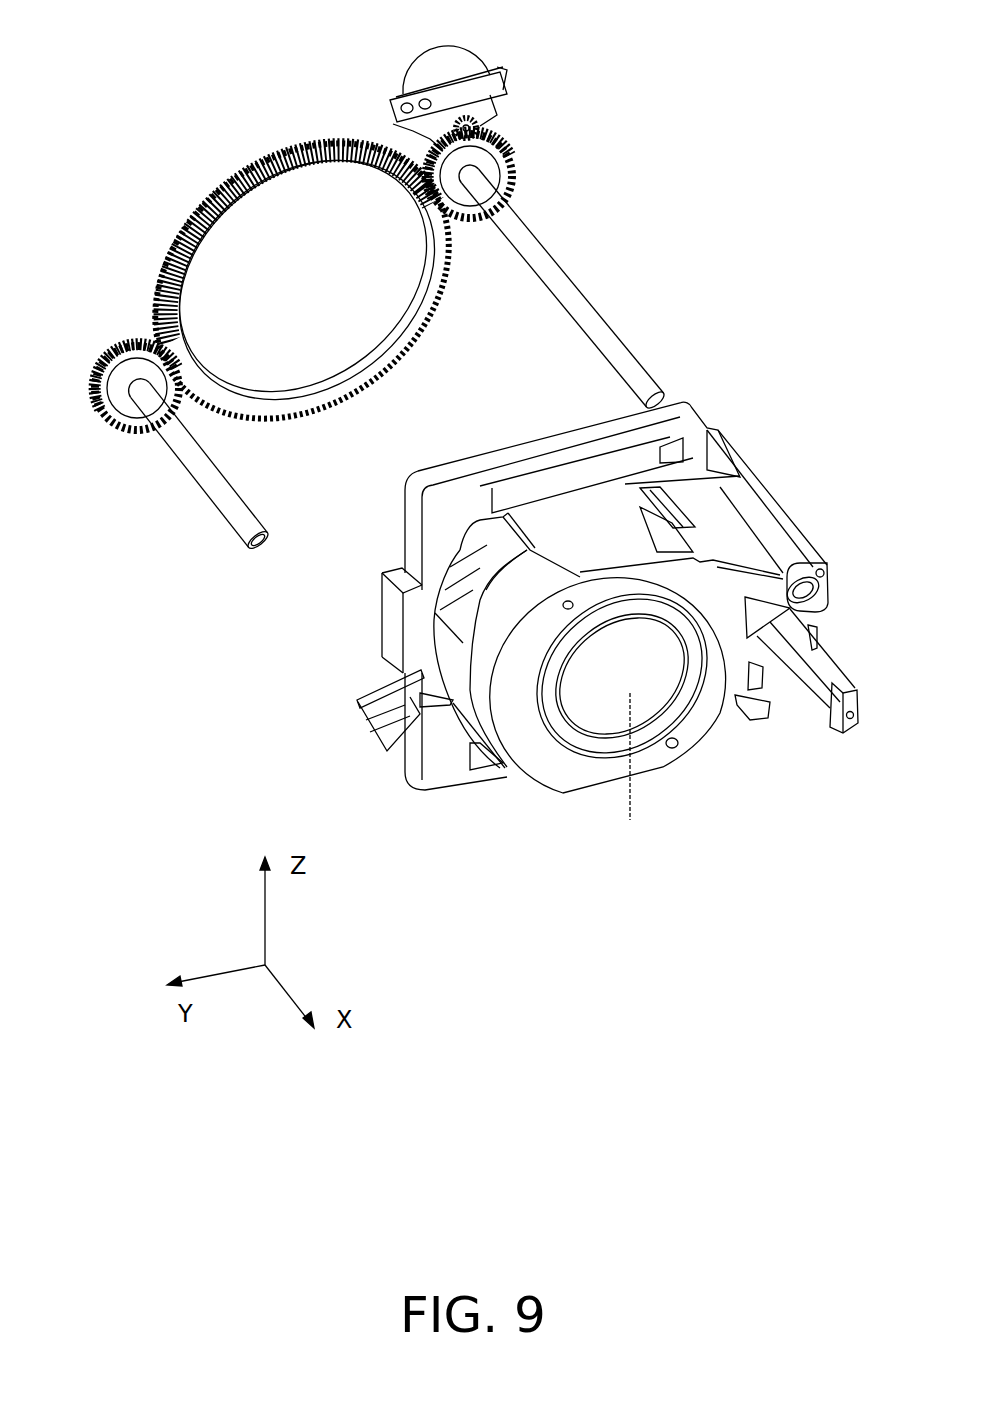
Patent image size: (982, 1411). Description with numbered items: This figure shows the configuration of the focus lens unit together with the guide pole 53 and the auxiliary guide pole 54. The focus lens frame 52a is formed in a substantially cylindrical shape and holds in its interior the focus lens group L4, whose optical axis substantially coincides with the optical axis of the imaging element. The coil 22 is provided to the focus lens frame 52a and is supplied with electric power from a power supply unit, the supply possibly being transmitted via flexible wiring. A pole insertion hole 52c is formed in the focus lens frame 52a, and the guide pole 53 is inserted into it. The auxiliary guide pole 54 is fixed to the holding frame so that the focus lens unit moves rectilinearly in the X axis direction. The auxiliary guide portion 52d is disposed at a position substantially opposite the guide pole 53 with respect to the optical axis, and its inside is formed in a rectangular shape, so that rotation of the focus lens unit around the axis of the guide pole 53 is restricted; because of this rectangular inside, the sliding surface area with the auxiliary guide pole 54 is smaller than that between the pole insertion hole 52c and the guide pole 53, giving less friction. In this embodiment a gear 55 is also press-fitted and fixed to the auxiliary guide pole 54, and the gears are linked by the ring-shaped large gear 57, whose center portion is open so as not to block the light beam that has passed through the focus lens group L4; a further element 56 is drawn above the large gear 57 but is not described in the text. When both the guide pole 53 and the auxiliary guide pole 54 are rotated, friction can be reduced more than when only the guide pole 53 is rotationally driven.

The coil 22 is at (520, 450).
The focus lens frame 52a is at (702, 727).
The pole insertion hole 52c is at (810, 573).
The auxiliary guide portion 52d is at (393, 713).
The guide pole 53 is at (616, 354).
The auxiliary guide pole 54 is at (220, 492).
The gear 55 is at (519, 156).
The motor 56 is at (470, 73).
The large gear 57 is at (237, 172).
The focus lens group L4 is at (633, 775).